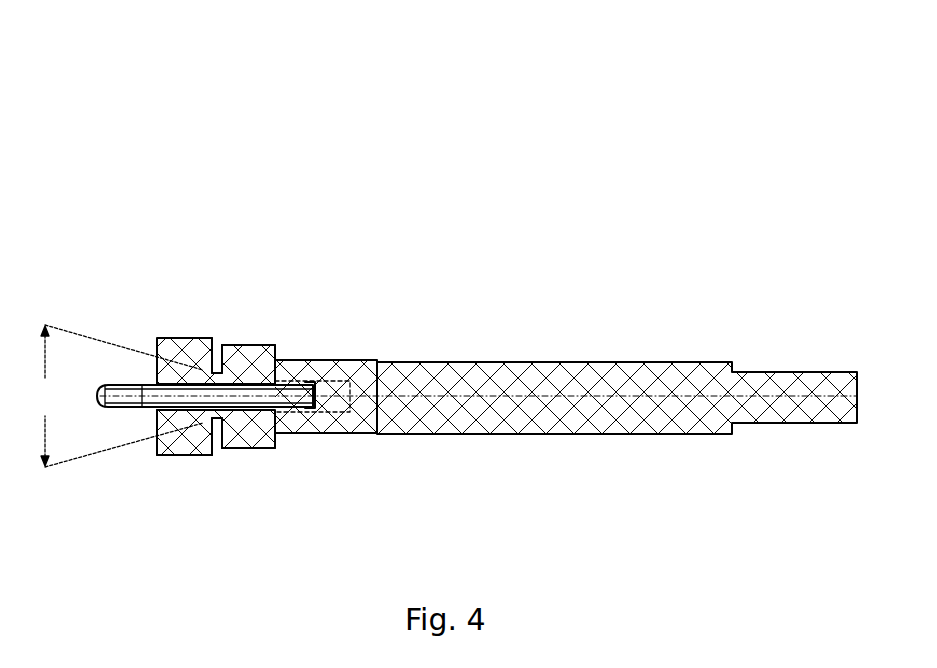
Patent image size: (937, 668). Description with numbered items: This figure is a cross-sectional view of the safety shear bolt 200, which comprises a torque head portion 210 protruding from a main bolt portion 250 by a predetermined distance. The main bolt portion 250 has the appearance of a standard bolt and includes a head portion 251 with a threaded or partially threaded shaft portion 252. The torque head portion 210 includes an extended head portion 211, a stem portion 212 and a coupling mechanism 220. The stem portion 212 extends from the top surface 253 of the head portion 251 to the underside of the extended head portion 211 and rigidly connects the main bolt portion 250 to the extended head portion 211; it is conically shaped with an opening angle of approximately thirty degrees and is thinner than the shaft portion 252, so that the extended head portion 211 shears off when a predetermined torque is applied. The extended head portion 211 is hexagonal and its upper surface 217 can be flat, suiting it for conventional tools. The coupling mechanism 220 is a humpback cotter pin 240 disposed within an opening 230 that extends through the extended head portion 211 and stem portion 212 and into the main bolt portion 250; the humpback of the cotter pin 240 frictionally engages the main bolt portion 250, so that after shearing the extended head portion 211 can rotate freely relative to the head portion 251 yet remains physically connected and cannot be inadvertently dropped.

The safety shear bolt 200 is at (112, 78).
The torque head portion 210 is at (225, 310).
The extended head portion 211 is at (166, 458).
The stem portion 212 is at (214, 420).
The upper surface 217 is at (154, 367).
The coupling mechanism 220 is at (112, 468).
The opening 230 is at (309, 375).
The humpback cotter pin 240 is at (123, 407).
The main bolt portion 250 is at (857, 310).
The head portion 251 is at (268, 341).
The shaft portion 252 is at (629, 359).
The top surface 253 is at (221, 355).